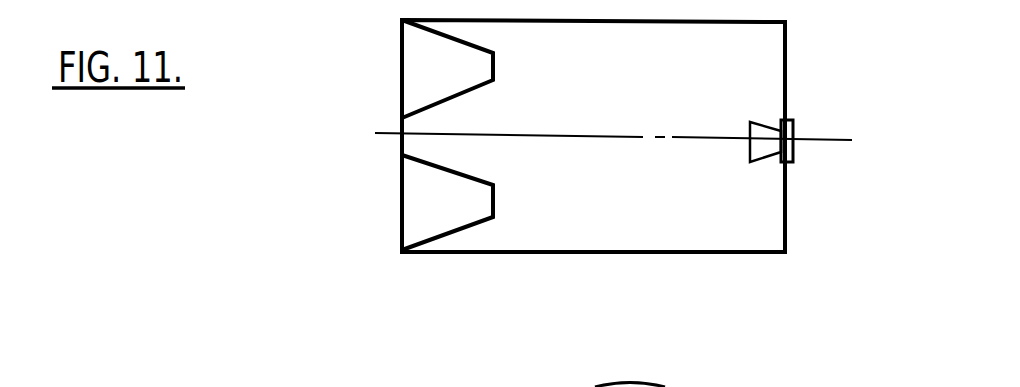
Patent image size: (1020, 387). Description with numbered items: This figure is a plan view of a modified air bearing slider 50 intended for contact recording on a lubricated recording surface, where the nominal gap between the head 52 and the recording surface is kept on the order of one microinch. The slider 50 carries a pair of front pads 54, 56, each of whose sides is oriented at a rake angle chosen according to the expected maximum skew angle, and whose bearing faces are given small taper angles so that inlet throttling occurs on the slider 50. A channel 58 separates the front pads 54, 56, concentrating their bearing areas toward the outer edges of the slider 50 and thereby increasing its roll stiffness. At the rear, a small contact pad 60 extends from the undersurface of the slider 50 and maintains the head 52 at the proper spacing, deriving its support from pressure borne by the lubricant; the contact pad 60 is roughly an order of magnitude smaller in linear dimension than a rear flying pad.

The air bearing slider 50 is at (795, 57).
The head 52 is at (795, 128).
The front pad 54 is at (401, 43).
The front pad 56 is at (401, 198).
The channel 58 is at (401, 129).
The rear contact pad 60 is at (771, 130).